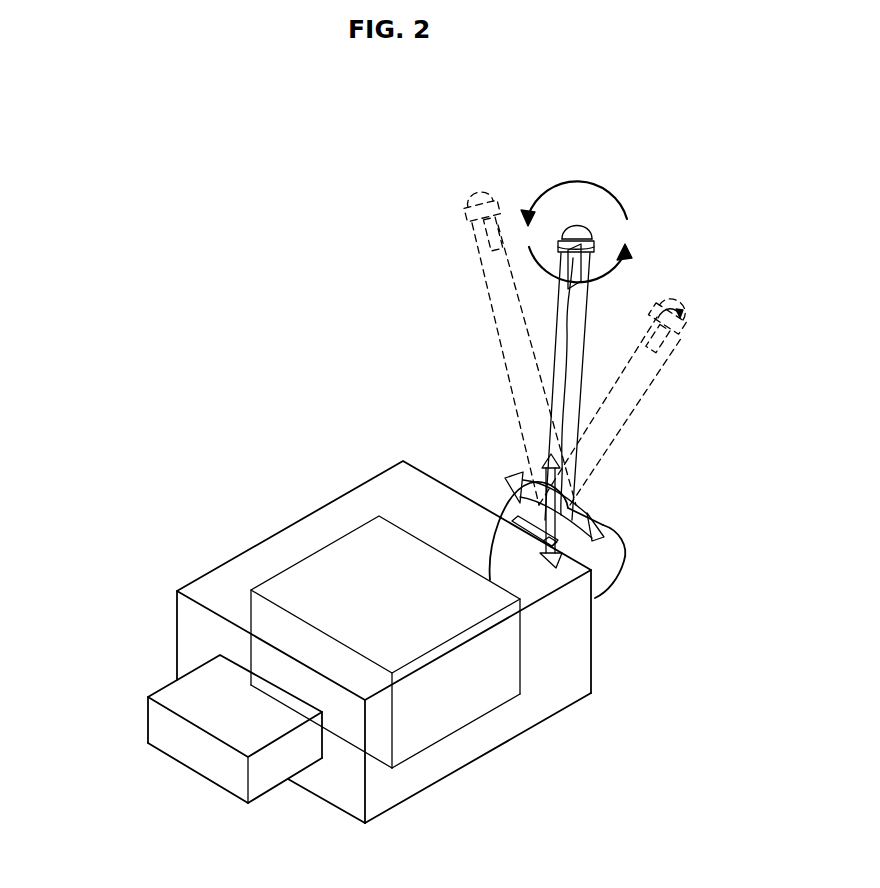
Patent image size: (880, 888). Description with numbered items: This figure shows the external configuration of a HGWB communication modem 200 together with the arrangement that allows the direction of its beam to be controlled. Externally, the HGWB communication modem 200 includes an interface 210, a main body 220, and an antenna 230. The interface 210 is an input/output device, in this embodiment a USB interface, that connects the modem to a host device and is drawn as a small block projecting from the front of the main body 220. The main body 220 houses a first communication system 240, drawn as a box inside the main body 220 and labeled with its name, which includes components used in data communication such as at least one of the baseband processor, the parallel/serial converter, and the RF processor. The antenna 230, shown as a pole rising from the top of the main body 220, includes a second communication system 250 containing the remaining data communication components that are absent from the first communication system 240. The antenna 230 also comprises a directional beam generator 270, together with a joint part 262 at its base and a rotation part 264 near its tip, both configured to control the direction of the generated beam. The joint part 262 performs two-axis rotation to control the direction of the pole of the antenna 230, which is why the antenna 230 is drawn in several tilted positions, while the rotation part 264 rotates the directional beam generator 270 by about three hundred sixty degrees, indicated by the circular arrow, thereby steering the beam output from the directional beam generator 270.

The HGWB communication modem 200 is at (240, 308).
The interface 210 is at (168, 684).
The main body 220 is at (363, 484).
The antenna 230 is at (565, 398).
The first communication system 240 is at (322, 548).
The second communication system 250 is at (592, 265).
The joint part 262 is at (605, 557).
The rotation part 264 is at (593, 245).
The directional beam generator 270 is at (574, 227).